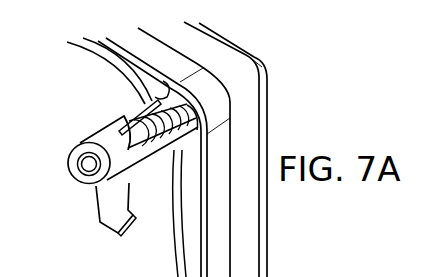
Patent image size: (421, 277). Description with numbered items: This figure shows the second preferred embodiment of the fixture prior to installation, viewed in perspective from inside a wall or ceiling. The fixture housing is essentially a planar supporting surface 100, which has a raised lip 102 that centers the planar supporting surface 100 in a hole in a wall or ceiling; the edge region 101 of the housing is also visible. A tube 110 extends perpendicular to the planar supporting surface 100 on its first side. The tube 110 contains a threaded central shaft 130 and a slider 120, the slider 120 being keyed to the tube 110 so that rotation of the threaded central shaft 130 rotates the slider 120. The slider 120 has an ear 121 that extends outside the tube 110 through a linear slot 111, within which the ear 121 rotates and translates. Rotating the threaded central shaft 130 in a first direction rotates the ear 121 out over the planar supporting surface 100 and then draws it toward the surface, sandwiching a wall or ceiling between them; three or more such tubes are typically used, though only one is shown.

The planar supporting surface 100 is at (270, 98).
The housing top wall 101 is at (212, 52).
The raised lip 102 is at (173, 237).
The tube 110 is at (142, 108).
The linear slot 111 is at (150, 128).
The slider 120 is at (95, 206).
The ear 121 is at (120, 232).
The threaded central shaft 130 is at (127, 124).